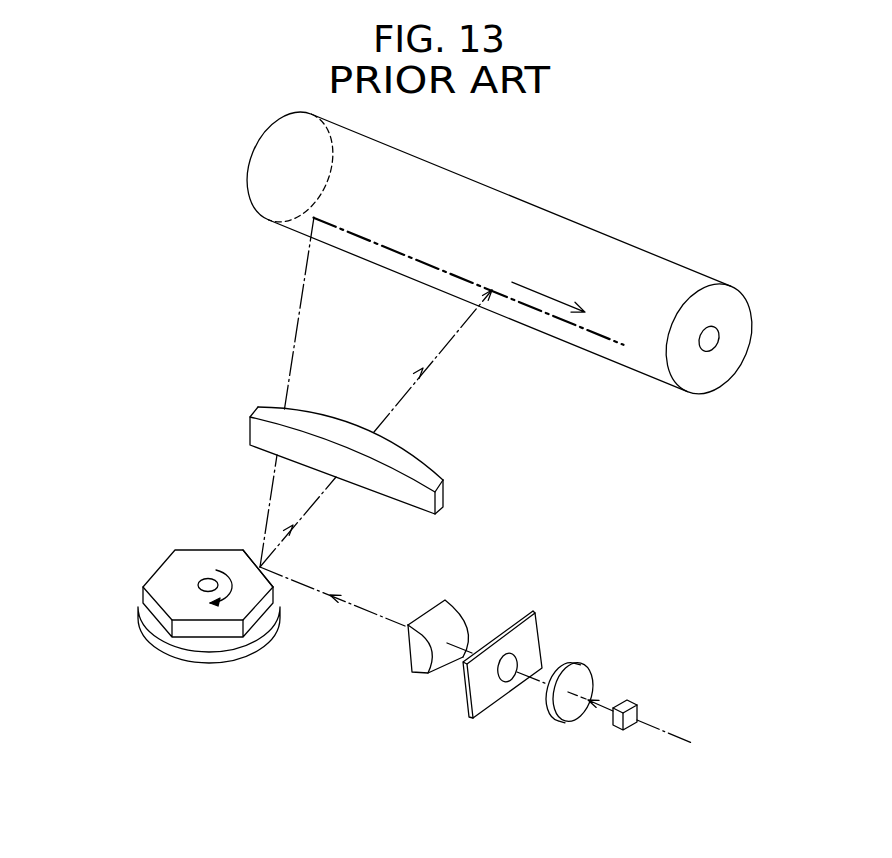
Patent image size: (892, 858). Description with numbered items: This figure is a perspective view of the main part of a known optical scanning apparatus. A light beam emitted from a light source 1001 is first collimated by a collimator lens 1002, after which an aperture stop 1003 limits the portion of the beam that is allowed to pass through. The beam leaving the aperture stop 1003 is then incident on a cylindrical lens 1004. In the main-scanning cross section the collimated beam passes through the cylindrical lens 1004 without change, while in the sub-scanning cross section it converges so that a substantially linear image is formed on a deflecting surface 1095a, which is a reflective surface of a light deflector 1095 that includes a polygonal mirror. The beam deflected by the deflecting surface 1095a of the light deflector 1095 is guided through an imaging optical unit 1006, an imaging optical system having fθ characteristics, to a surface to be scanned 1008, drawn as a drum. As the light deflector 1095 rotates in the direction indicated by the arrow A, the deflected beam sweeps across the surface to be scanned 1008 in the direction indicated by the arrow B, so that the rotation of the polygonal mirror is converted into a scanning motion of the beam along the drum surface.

The light source 1001 is at (617, 730).
The collimator lens 1002 is at (567, 718).
The aperture stop 1003 is at (477, 687).
The cylindrical lens 1004 is at (420, 655).
The imaging optical unit 1006 is at (327, 423).
The surface to be scanned 1008 is at (620, 358).
The light deflector 1095 is at (173, 583).
The deflecting surface 1095a is at (260, 567).
The rotation direction arrow A is at (228, 598).
The scanning direction arrow B is at (559, 304).